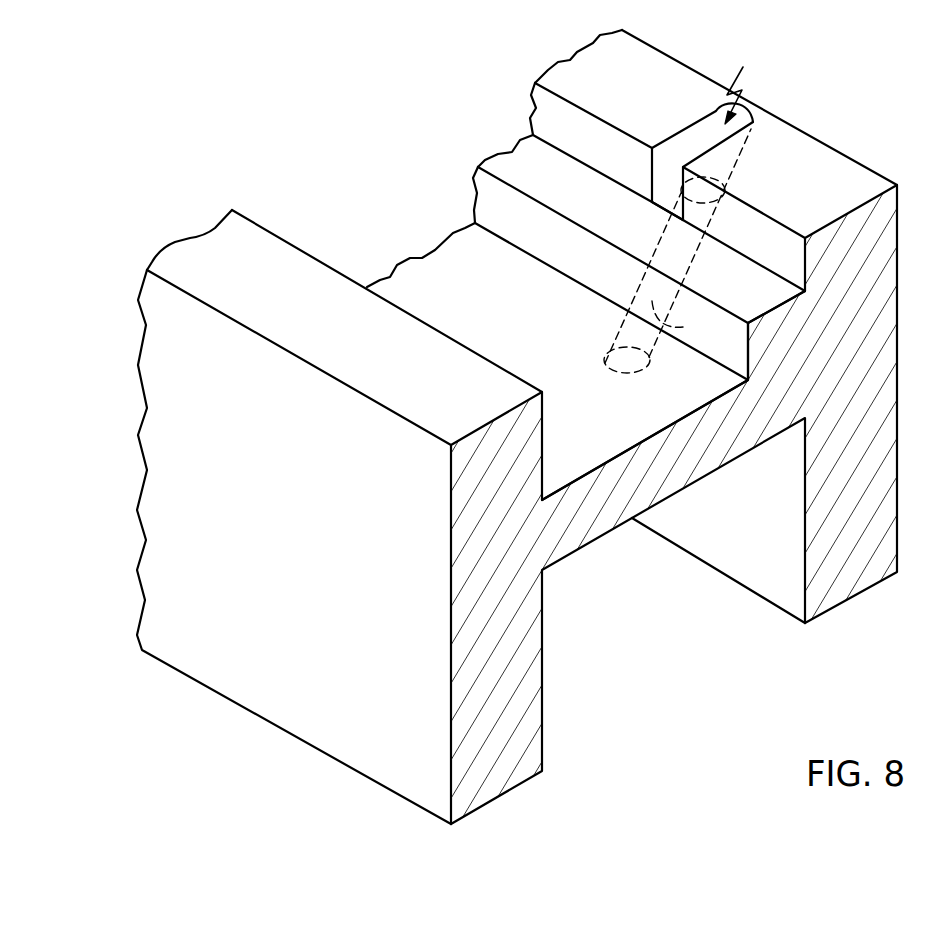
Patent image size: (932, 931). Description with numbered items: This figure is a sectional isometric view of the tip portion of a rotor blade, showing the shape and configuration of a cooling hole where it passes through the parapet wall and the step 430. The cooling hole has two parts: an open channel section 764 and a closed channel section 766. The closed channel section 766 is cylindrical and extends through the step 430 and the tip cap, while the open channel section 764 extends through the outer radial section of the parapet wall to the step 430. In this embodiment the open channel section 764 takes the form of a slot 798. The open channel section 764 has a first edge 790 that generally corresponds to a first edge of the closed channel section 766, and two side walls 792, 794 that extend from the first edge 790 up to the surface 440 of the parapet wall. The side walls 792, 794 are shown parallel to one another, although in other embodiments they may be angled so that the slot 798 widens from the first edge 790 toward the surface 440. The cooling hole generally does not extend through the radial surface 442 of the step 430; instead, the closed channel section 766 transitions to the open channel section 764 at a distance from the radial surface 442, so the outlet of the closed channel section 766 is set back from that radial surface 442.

The step 430 is at (488, 202).
The surface of the parapet wall 440 is at (535, 112).
The radial surface 442 is at (505, 157).
The open channel section 764 is at (668, 161).
The closed channel section 766 is at (671, 318).
The first edge 790 is at (752, 108).
The side wall 792 is at (681, 130).
The side wall 794 is at (727, 150).
The slot 798 is at (749, 82).